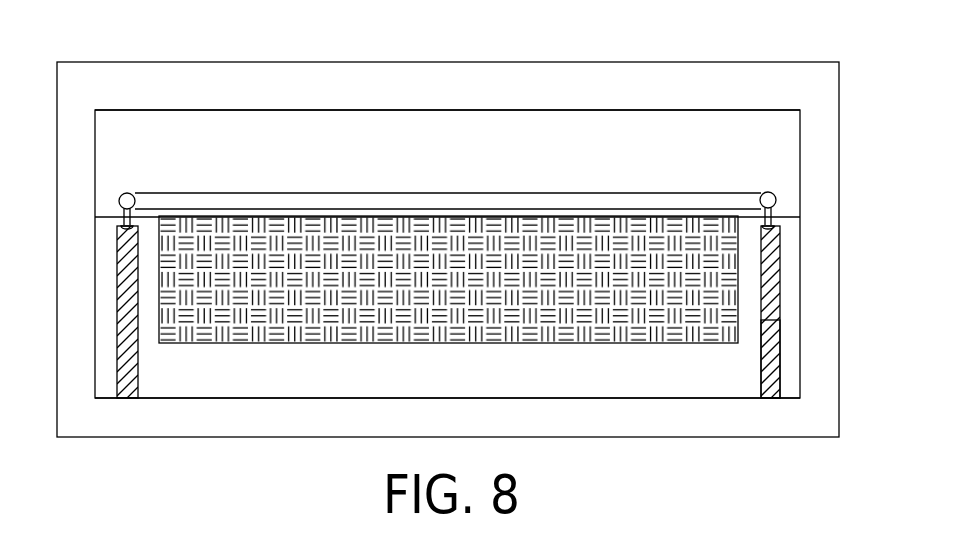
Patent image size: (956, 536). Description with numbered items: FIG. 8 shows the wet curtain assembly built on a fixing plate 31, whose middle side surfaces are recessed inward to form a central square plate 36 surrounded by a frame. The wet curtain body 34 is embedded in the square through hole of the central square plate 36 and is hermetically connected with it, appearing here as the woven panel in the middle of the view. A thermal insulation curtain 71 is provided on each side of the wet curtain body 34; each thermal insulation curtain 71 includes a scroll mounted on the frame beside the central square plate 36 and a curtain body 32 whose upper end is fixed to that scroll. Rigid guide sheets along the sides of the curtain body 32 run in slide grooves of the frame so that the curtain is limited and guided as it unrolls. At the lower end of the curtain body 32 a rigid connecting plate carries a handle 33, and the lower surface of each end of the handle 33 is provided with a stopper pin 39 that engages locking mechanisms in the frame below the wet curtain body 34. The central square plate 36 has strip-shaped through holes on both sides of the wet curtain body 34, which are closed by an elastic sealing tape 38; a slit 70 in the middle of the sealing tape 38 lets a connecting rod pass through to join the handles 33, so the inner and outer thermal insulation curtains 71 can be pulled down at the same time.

The fixing plate 31 is at (103, 62).
The curtain body 32 is at (210, 125).
The handle 33 is at (330, 203).
The wet curtain body 34 is at (445, 248).
The central square plate 36 is at (617, 373).
The sealing tape 38 is at (763, 313).
The stopper pin 39 is at (768, 227).
The slit 70 is at (768, 367).
The thermal insulation curtain 71 is at (382, 110).